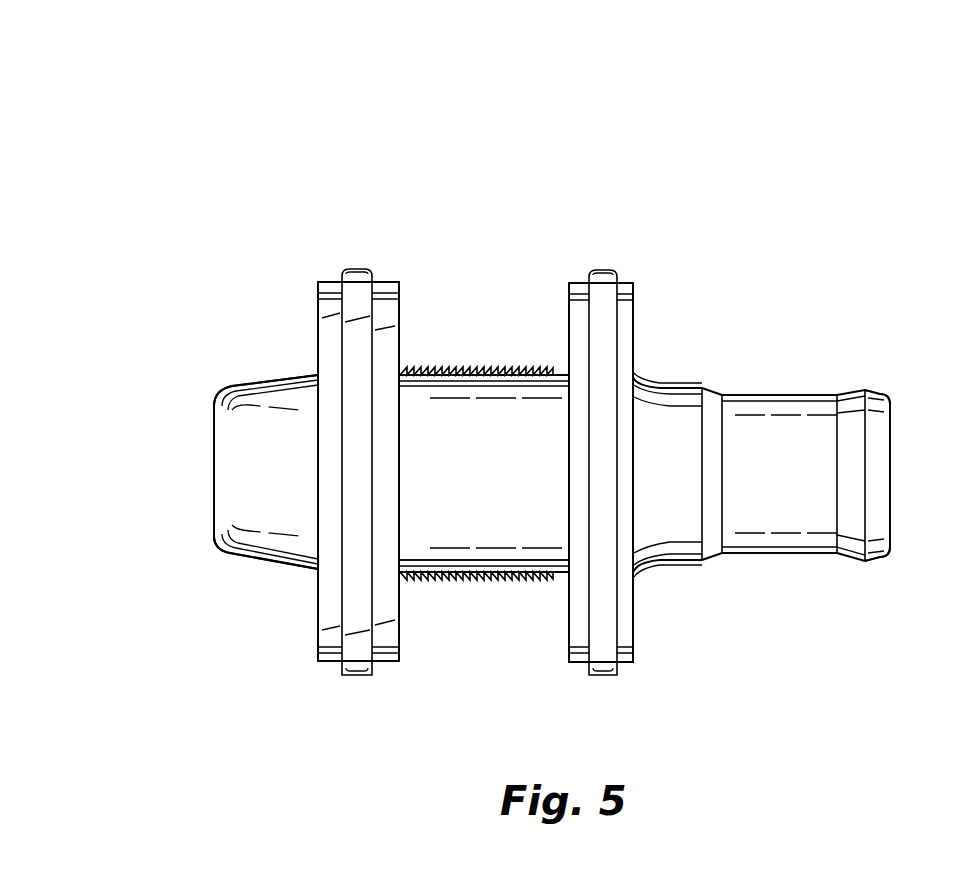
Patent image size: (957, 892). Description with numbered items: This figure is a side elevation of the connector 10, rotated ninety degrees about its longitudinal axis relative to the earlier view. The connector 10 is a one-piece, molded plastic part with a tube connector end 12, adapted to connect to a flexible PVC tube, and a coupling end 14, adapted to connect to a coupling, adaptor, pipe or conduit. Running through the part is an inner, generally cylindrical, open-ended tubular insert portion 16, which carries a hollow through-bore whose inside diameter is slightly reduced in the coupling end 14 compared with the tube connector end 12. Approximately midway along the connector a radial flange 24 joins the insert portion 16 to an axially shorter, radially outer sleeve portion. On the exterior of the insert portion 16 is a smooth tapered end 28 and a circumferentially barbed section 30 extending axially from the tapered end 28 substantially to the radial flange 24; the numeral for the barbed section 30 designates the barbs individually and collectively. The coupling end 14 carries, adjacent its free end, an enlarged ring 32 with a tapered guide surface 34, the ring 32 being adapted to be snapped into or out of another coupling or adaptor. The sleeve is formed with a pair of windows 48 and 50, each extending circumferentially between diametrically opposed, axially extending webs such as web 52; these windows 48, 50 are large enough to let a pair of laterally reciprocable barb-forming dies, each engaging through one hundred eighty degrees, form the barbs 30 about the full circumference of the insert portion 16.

The connector 10 is at (619, 186).
The tube connector end 12 is at (256, 626).
The coupling end 14 is at (801, 614).
The tubular insert portion 16 is at (266, 380).
The radial flange 24 is at (636, 337).
The tapered end 28 is at (240, 562).
The barbed section 30 is at (500, 368).
The enlarged ring 32 is at (848, 390).
The tapered guide surface 34 is at (886, 393).
The window 48 is at (463, 326).
The window 50 is at (476, 620).
The web 52 is at (461, 540).